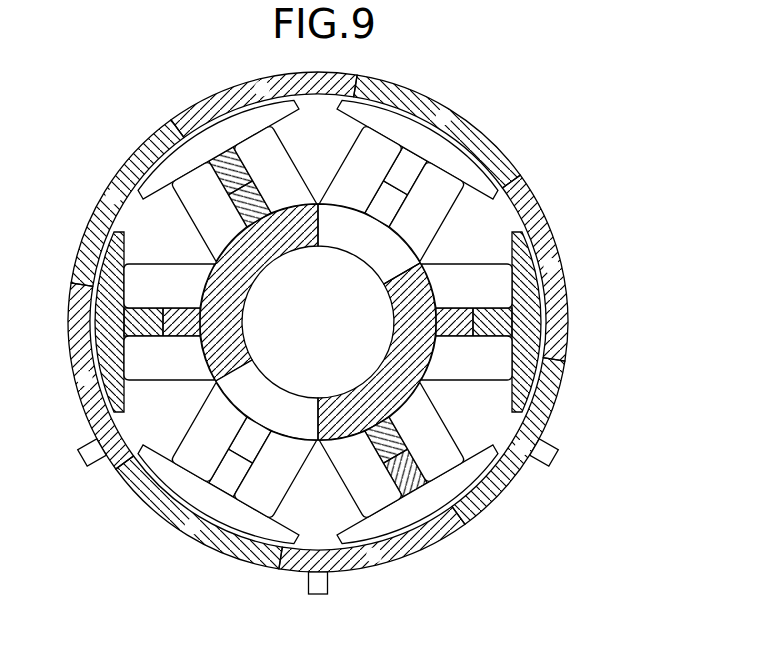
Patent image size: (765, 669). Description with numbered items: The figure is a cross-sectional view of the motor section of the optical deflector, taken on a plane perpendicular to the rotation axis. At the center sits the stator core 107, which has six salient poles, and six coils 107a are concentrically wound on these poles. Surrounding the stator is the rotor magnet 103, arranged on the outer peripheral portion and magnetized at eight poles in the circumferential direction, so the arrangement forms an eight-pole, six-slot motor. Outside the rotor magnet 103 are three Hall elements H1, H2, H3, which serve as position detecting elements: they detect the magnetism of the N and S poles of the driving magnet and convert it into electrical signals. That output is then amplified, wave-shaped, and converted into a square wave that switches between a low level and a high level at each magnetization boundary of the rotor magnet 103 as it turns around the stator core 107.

The rotor magnet 103 is at (562, 372).
The stator core 107 is at (522, 325).
The coil 107a is at (465, 283).
The Hall element H1 is at (79, 458).
The Hall element H2 is at (318, 595).
The Hall element H3 is at (554, 458).